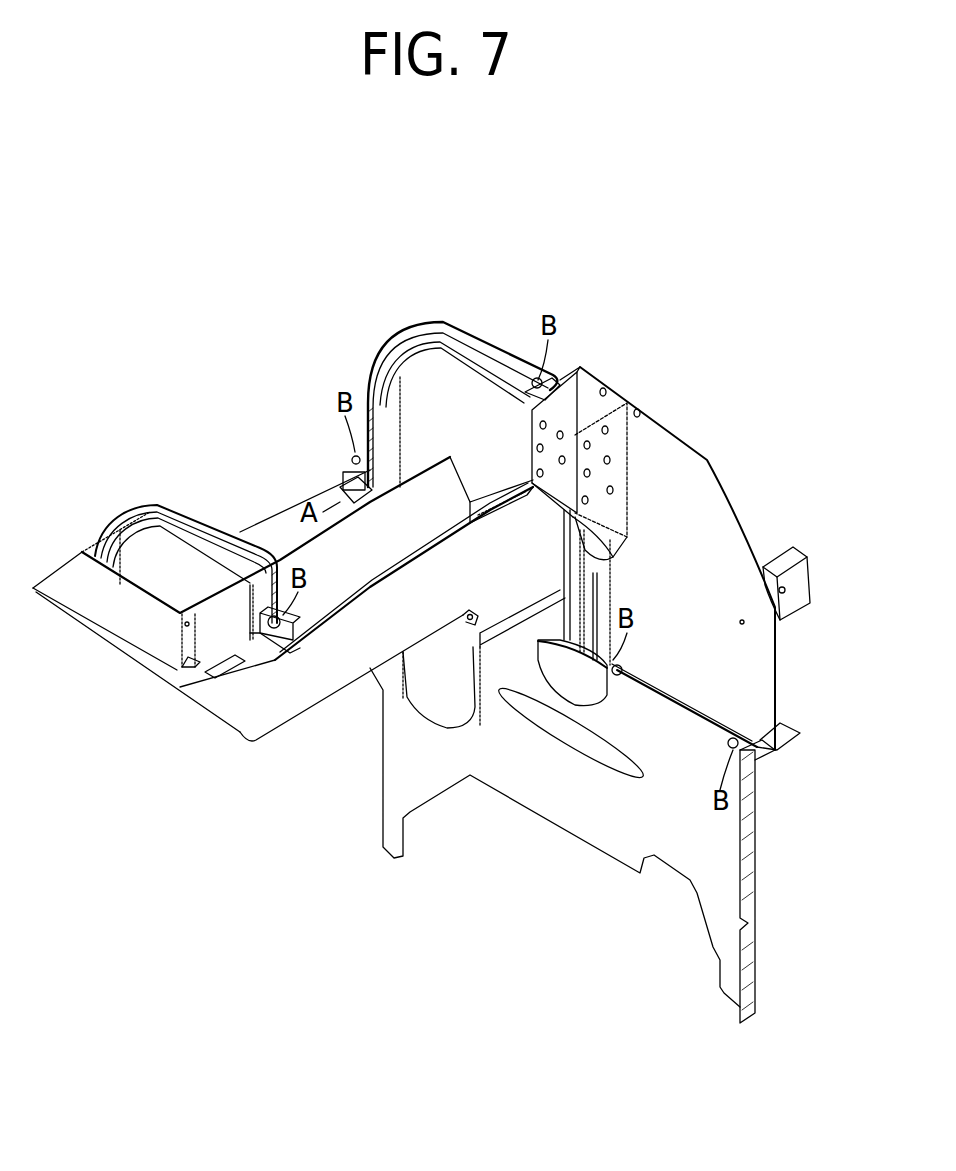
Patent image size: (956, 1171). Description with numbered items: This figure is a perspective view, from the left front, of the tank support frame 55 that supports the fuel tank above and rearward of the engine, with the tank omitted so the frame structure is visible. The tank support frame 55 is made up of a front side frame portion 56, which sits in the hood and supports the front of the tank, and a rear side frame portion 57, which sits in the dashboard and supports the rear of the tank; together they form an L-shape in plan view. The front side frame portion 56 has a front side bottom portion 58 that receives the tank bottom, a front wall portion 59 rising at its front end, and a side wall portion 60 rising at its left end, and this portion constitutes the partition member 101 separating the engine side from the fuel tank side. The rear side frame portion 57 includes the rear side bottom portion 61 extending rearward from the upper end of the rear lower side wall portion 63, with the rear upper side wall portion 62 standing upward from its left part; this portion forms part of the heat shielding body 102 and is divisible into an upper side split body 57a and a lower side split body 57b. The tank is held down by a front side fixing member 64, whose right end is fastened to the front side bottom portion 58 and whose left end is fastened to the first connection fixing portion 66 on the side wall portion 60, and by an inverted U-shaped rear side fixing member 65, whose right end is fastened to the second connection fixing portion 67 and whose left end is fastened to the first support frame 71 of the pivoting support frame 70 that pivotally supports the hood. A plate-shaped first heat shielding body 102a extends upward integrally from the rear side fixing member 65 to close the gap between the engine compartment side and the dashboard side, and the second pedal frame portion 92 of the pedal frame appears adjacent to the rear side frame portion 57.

The tank support frame 55 is at (408, 893).
The front side frame portion 56 is at (307, 737).
The rear side frame portion 57 is at (600, 706).
The upper side split body 57a is at (710, 589).
The lower side split body 57b is at (781, 881).
The front side bottom portion 58 is at (270, 530).
The front wall portion 59 is at (90, 600).
The side wall portion 60 is at (333, 677).
The rear side bottom portion 61 is at (787, 740).
The rear upper side wall portion 62 is at (763, 653).
The rear lower side wall portion 63 is at (723, 850).
The front side fixing member 64 is at (157, 520).
The rear side fixing member 65 is at (440, 345).
The first connection fixing portion 66 is at (190, 655).
The second connection fixing portion 67 is at (350, 460).
The pivoting support frame 70 is at (605, 480).
The first support frame 71 is at (618, 430).
The second pedal frame portion 92 is at (773, 565).
The partition member 101 is at (461, 706).
The heat shielding body 102 is at (461, 650).
The first heat shielding body 102a is at (446, 370).